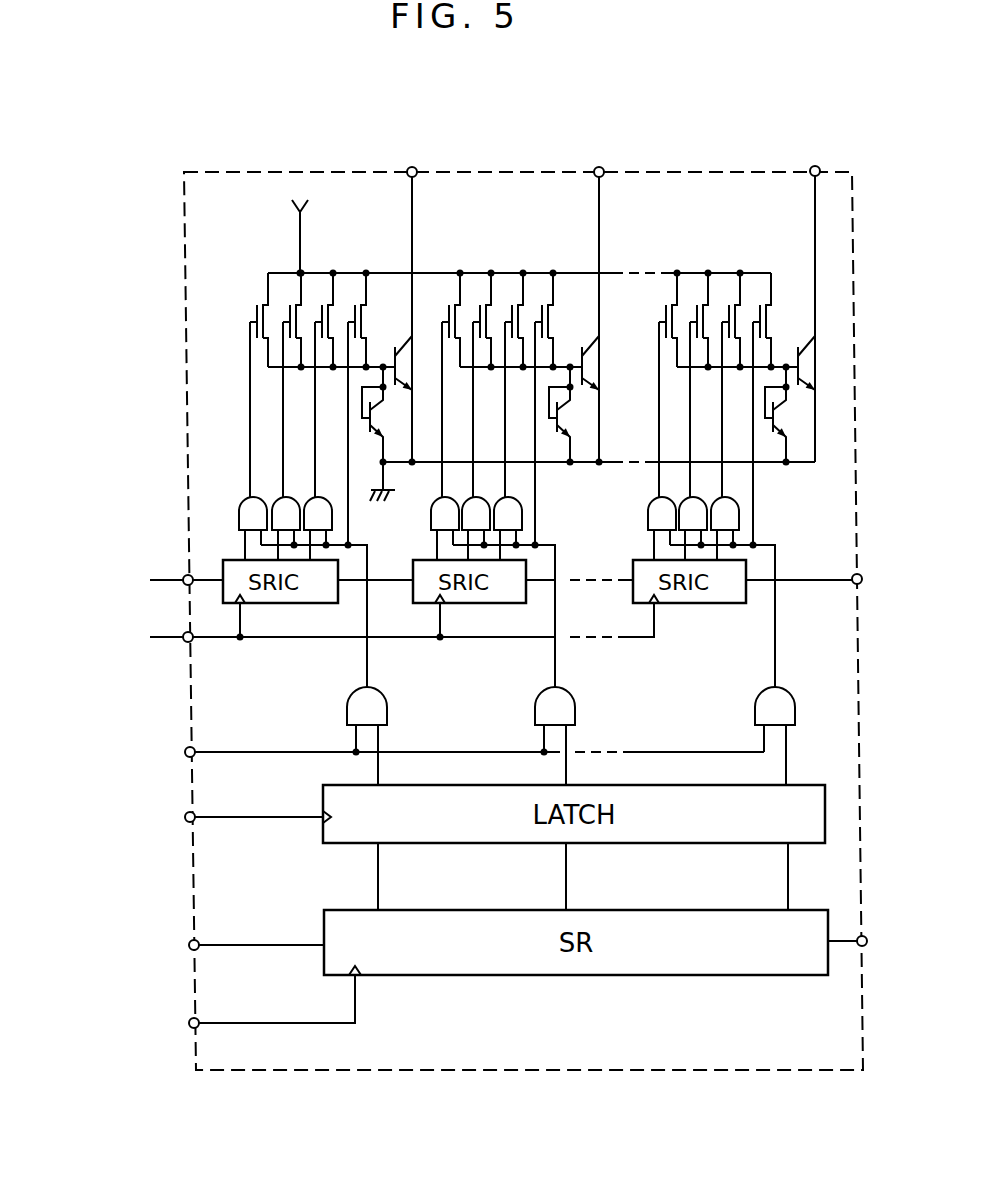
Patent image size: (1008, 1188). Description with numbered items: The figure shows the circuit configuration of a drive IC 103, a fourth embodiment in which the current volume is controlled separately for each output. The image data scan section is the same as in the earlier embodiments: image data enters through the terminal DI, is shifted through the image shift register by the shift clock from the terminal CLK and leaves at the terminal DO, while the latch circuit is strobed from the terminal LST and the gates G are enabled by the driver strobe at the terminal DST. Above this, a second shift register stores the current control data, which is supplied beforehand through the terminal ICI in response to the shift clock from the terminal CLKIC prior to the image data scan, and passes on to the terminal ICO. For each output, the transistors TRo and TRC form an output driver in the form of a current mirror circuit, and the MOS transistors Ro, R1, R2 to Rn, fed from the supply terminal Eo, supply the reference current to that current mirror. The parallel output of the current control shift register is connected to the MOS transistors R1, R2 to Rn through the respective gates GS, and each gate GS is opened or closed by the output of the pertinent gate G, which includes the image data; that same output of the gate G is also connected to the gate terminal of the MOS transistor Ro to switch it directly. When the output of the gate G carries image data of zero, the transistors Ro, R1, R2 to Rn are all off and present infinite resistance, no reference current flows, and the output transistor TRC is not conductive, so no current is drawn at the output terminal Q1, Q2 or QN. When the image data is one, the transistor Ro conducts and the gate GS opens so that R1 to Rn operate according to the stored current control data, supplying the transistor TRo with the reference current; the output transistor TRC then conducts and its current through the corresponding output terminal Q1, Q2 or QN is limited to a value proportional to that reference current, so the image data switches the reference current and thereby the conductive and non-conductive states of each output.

The drive IC 103 is at (722, 1072).
The output terminal Q1 is at (413, 167).
The output terminal Q2 is at (599, 167).
The output terminal QN is at (816, 166).
The power supply terminal Eo is at (308, 223).
The MOS transistor R1 is at (255, 303).
The MOS transistor R2 is at (290, 310).
The MOS transistor Rn is at (320, 312).
The MOS transistor Ro is at (356, 313).
The output transistor TRC is at (415, 362).
The transistor TRo is at (370, 433).
The gate GS is at (248, 498).
The gate G is at (348, 702).
The current control data input terminal ICI is at (184, 578).
The shift clock terminal CLKIC is at (187, 641).
The driver strobe terminal DST is at (189, 748).
The latch strobe terminal LST is at (190, 822).
The image data input terminal DI is at (193, 940).
The shift clock terminal CLK is at (193, 1019).
The current control data output terminal ICO is at (861, 575).
The image data output terminal DO is at (865, 936).